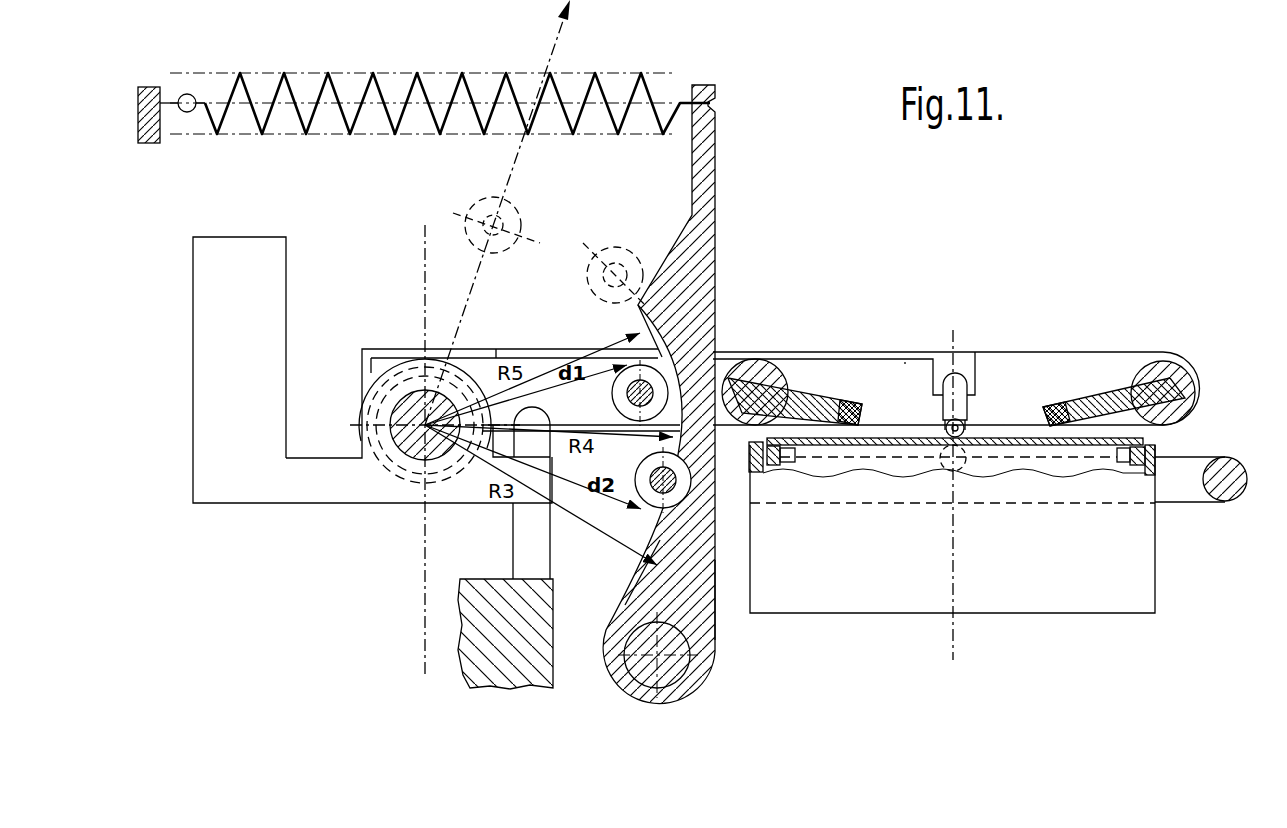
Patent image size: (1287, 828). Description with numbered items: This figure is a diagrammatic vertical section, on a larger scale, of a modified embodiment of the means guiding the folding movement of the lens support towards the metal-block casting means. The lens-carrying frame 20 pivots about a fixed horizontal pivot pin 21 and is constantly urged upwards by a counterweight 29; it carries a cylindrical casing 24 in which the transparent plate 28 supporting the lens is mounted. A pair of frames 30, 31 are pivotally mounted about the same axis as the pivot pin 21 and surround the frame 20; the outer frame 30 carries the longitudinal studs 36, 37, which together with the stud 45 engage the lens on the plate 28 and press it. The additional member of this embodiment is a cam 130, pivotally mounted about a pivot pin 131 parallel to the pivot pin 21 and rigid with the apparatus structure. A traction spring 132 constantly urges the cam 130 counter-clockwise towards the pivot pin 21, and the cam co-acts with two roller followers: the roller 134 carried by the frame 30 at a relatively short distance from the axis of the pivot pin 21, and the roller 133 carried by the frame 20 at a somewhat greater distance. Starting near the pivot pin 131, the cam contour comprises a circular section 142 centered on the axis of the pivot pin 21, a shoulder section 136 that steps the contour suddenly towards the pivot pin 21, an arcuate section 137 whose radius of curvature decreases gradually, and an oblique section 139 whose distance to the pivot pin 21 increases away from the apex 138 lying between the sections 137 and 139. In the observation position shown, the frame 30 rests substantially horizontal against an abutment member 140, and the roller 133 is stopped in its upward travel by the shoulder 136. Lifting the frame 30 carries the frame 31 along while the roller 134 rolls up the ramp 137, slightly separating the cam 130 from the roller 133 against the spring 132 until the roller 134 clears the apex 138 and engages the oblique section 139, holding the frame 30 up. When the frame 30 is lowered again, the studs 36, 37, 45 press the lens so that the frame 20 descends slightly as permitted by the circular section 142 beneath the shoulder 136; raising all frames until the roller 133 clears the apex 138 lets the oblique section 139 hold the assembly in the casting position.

The traction spring 132 is at (468, 76).
The roller follower 134 is at (512, 212).
The oblique section 139 is at (690, 226).
The roller follower 133 is at (632, 258).
The apex 138 is at (636, 312).
The arcuate section 137 is at (632, 338).
The counterweight 29 is at (273, 303).
The pivot pin 21 is at (405, 415).
The shoulder section 136 is at (714, 462).
The cam 130 is at (703, 592).
The pivot pin 131 is at (695, 664).
The circular section 142 is at (655, 570).
The abutment member 140 is at (540, 623).
The stud 37 is at (810, 396).
The frame 31 is at (872, 358).
The outer frame 30 is at (905, 363).
The stud 45 is at (967, 378).
The stud 36 is at (1078, 405).
The plate 28 is at (1005, 440).
The frame 20 is at (1193, 508).
The cylindrical casing 24 is at (1085, 605).